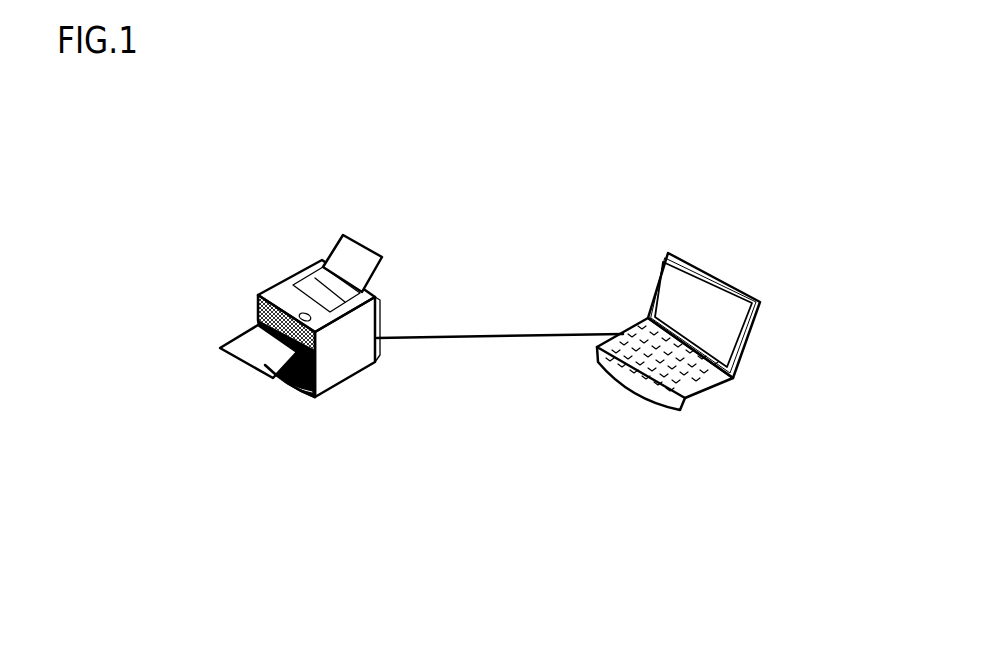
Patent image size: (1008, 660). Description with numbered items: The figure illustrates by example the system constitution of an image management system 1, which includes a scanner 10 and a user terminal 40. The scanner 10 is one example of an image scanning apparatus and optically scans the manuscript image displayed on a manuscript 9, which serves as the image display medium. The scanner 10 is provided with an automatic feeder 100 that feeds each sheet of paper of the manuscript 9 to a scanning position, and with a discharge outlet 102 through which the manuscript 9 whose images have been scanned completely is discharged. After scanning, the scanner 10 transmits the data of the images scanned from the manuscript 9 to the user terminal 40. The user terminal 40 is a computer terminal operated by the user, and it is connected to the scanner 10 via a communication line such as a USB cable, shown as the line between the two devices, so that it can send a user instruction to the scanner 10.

The image management system 1 is at (434, 391).
The manuscript 9 is at (237, 338).
The scanner 10 is at (305, 268).
The user terminal 40 is at (688, 250).
The automatic feeder 100 is at (271, 378).
The discharge outlet 102 is at (377, 293).